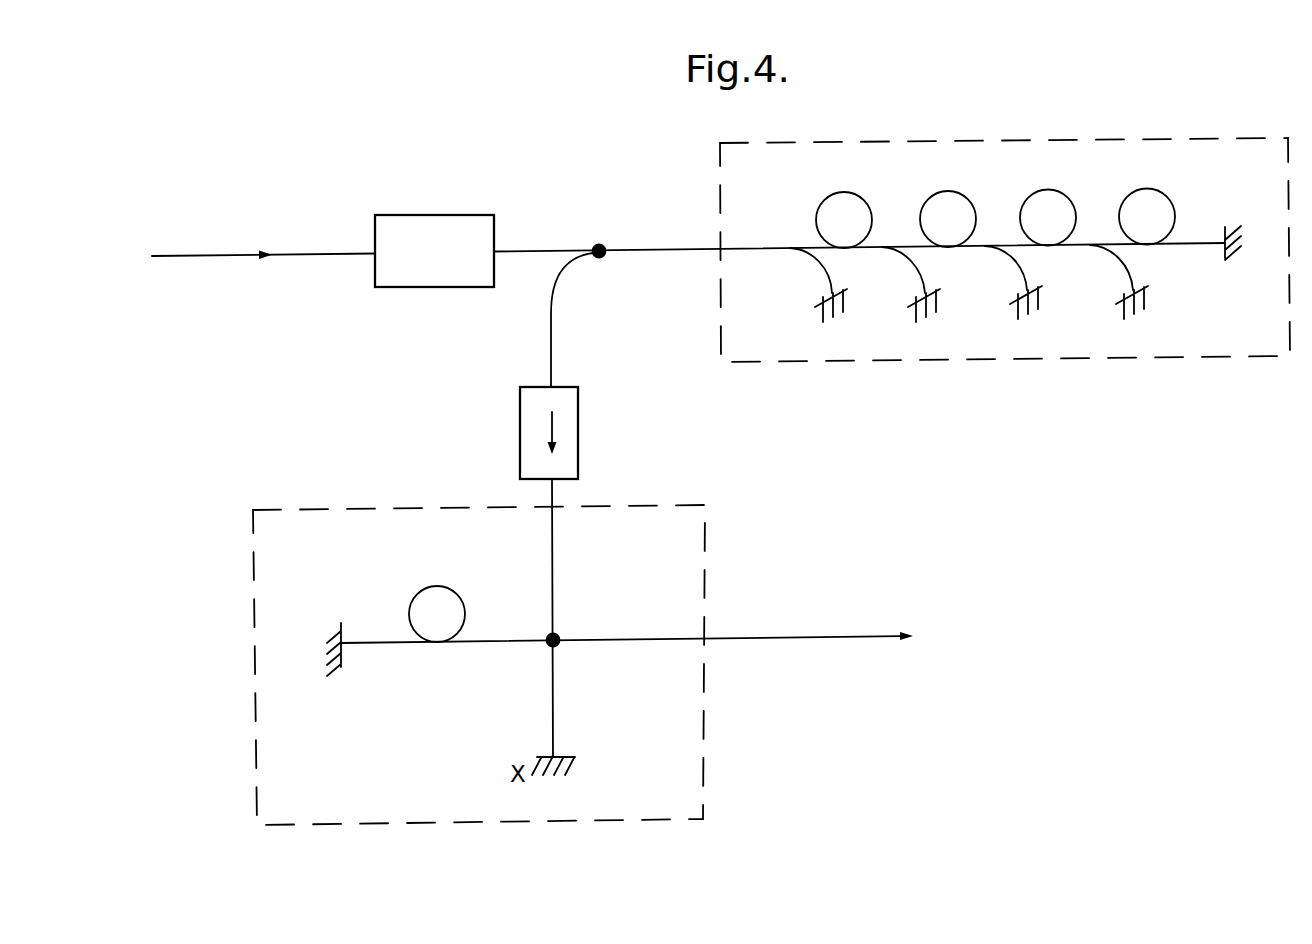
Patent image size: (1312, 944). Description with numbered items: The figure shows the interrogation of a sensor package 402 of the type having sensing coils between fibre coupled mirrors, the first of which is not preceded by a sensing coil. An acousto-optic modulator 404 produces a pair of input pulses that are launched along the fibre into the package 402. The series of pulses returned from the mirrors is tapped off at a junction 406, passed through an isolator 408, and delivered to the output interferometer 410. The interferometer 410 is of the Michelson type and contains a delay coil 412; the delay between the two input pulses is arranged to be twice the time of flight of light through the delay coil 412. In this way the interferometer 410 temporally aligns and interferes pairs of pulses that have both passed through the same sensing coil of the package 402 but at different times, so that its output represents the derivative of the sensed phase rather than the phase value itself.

The sensor package 402 is at (1226, 360).
The acousto-optic modulator 404 is at (428, 215).
The junction 406 is at (599, 244).
The isolator 408 is at (520, 453).
The output interferometer 410 is at (525, 665).
The delay coil 412 is at (417, 593).